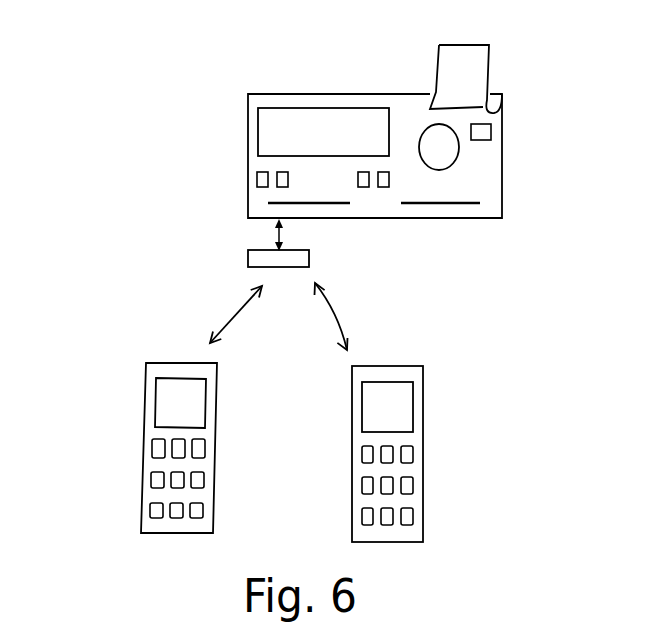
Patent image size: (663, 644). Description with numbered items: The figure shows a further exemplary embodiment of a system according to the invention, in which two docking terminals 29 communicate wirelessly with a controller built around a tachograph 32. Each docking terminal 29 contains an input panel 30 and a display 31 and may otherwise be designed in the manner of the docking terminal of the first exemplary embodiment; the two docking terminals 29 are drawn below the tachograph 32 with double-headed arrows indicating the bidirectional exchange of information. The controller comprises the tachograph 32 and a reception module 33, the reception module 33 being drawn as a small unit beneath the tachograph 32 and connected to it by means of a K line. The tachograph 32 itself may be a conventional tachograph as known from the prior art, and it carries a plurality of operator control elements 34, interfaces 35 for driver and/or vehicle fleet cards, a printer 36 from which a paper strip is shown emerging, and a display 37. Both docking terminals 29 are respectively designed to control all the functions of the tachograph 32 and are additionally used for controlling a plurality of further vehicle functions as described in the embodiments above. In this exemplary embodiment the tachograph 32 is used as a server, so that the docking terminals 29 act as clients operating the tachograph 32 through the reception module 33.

The docking terminal 29 is at (142, 425).
The input panel 30 is at (410, 485).
The display 31 is at (407, 390).
The tachograph 32 is at (248, 140).
The reception module 33 is at (248, 252).
The operator control elements 34 is at (257, 187).
The interfaces 35 is at (310, 203).
The printer 36 is at (498, 112).
The display 37 is at (317, 123).